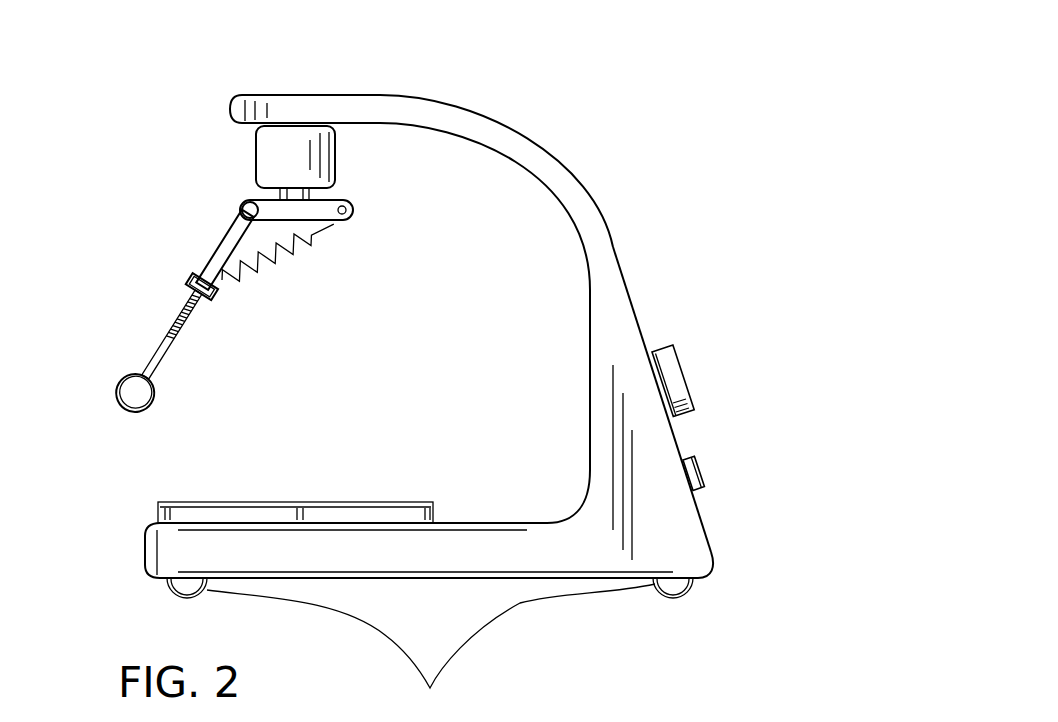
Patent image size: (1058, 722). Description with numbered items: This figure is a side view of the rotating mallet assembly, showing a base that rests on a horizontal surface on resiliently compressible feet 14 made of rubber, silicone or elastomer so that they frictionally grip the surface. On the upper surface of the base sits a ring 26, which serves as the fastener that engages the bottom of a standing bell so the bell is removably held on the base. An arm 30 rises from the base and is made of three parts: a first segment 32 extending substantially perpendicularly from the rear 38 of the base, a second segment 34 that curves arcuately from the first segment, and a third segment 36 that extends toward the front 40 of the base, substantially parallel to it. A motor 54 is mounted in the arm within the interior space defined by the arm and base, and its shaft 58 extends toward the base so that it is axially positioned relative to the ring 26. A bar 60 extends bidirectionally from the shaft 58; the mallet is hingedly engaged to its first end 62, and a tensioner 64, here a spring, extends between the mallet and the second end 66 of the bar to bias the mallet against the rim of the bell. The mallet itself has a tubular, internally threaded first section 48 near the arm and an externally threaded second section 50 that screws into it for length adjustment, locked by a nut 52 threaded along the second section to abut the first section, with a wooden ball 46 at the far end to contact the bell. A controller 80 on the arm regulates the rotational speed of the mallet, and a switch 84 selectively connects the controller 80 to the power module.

The feet 14 is at (431, 653).
The ring 26 is at (158, 507).
The arm 30 is at (412, 372).
The first segment 32 is at (591, 330).
The second segment 34 is at (533, 135).
The third segment 36 is at (313, 95).
The rear 38 is at (647, 537).
The front 40 is at (140, 552).
The ball 46 is at (132, 392).
The first section 48 is at (222, 248).
The second section 50 is at (163, 343).
The nut 52 is at (200, 275).
The motor 54 is at (292, 147).
The shaft 58 is at (303, 197).
The bar 60 is at (278, 210).
The first end 62 is at (247, 205).
The tensioner 64 is at (268, 262).
The second end 66 is at (350, 211).
The controller 80 is at (677, 380).
The switch 84 is at (705, 470).